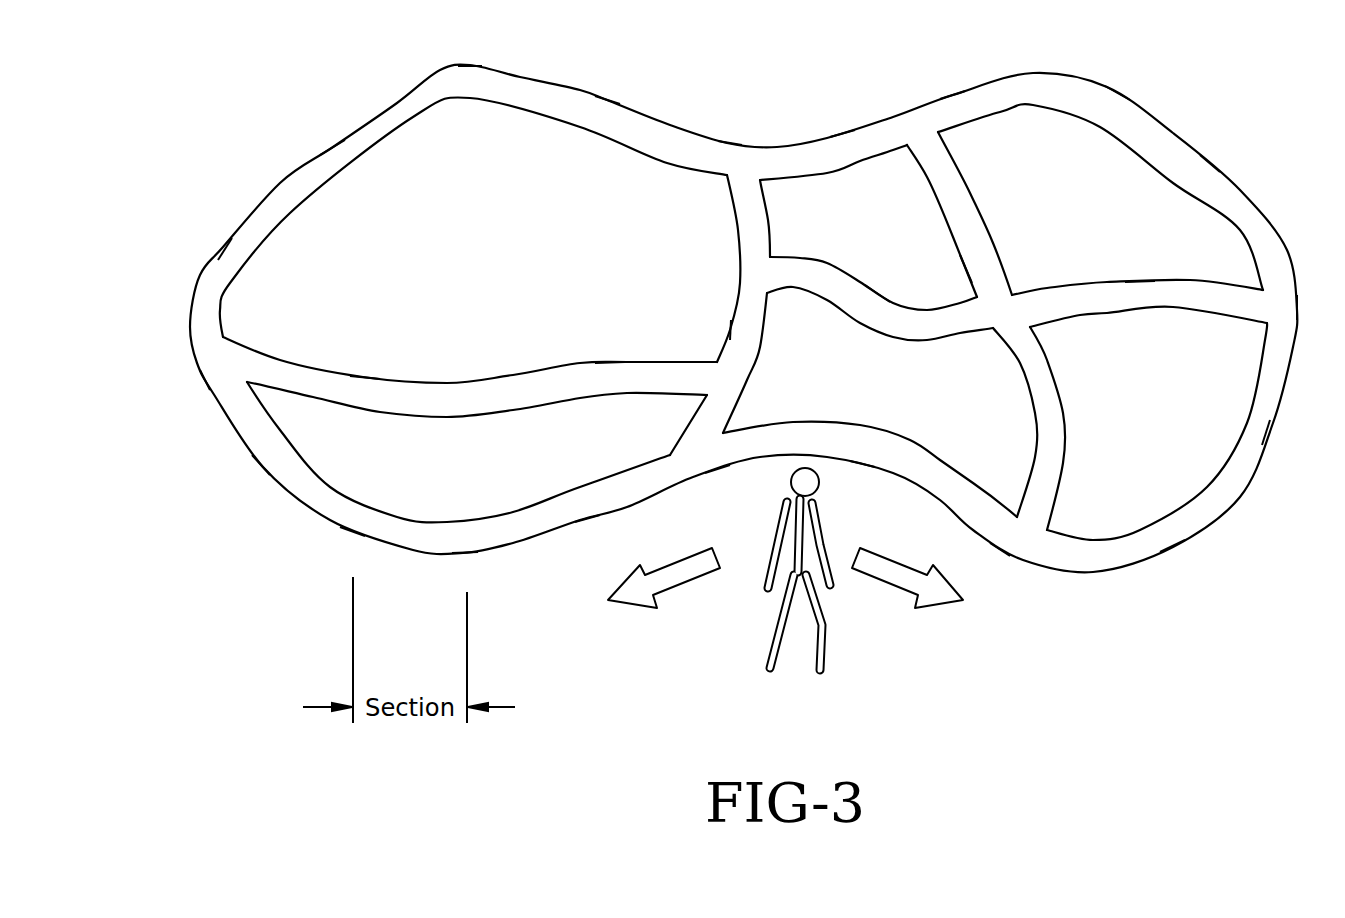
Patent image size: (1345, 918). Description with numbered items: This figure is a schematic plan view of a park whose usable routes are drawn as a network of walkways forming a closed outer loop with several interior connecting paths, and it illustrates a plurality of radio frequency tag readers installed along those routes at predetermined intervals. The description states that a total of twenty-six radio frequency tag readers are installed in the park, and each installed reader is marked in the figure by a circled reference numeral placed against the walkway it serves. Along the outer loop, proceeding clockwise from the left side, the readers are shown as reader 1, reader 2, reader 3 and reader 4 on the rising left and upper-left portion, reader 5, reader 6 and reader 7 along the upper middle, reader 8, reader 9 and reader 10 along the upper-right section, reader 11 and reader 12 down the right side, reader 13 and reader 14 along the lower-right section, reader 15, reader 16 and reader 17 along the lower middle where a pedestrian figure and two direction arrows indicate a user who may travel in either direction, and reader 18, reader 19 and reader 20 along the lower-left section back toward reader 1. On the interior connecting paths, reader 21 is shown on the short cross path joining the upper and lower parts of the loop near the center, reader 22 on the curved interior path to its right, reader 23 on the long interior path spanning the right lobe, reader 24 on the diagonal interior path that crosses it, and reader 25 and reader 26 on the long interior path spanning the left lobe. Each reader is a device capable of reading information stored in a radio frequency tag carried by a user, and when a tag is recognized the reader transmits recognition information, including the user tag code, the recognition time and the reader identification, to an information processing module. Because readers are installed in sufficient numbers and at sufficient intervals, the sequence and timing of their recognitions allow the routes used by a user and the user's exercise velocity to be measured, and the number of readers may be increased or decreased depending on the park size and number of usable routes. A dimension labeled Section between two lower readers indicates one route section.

The walkway section 1 is at (200, 393).
The walkway section 2 is at (211, 243).
The walkway section 3 is at (329, 137).
The walkway section 4 is at (470, 50).
The walkway section 5 is at (607, 86).
The walkway section 6 is at (730, 127).
The walkway section 7 is at (840, 119).
The walkway section 8 is at (953, 78).
The walkway section 9 is at (1117, 81).
The walkway section 10 is at (1219, 154).
The walkway section 11 is at (1314, 301).
The walkway section 12 is at (1281, 433).
The walkway section 13 is at (1184, 560).
The walkway section 14 is at (1003, 562).
The walkway section 15 is at (863, 477).
The walkway section 16 is at (718, 486).
The walkway section 17 is at (587, 534).
The walkway section 18 is at (465, 568).
The walkway section 19 is at (353, 547).
The walkway section 20 is at (257, 476).
The interior walkway section 21 is at (747, 328).
The interior walkway section 22 is at (872, 304).
The interior walkway section 23 is at (1140, 297).
The interior walkway section 24 is at (979, 264).
The interior walkway section 25 is at (612, 379).
The interior walkway section 26 is at (365, 390).